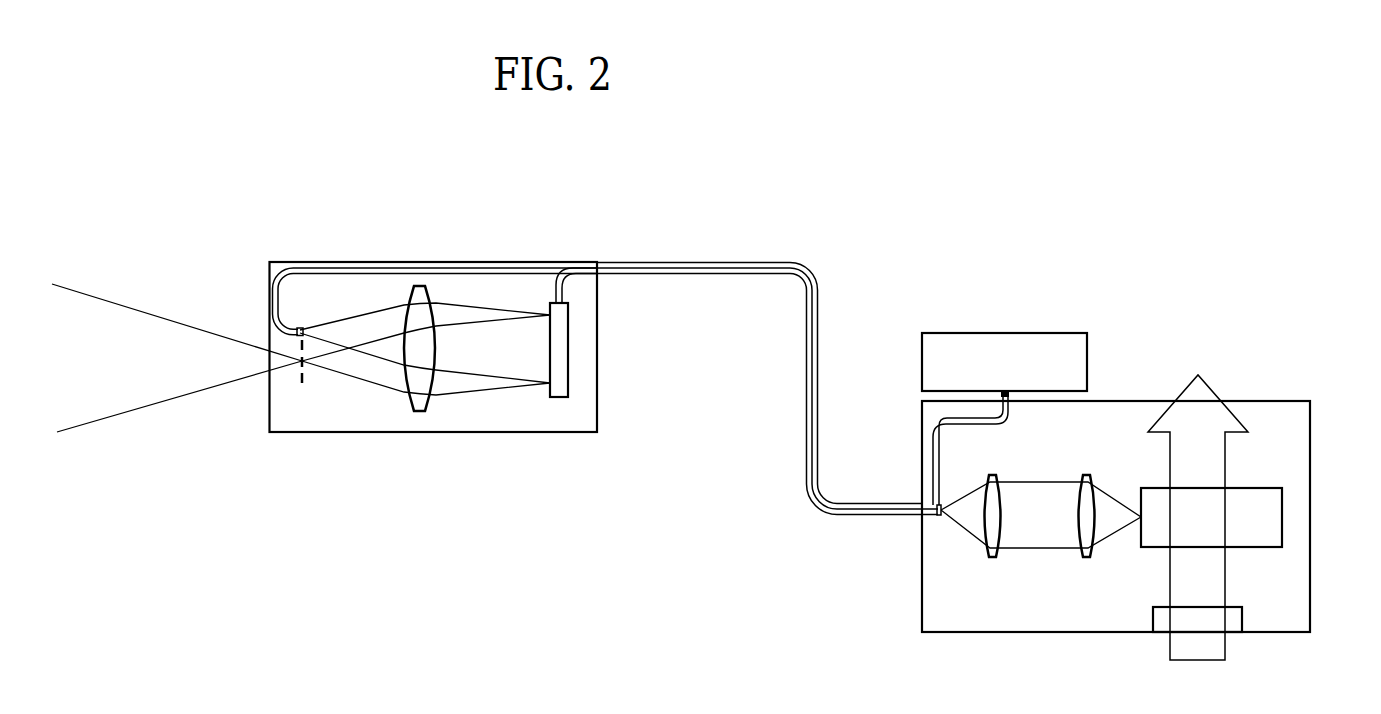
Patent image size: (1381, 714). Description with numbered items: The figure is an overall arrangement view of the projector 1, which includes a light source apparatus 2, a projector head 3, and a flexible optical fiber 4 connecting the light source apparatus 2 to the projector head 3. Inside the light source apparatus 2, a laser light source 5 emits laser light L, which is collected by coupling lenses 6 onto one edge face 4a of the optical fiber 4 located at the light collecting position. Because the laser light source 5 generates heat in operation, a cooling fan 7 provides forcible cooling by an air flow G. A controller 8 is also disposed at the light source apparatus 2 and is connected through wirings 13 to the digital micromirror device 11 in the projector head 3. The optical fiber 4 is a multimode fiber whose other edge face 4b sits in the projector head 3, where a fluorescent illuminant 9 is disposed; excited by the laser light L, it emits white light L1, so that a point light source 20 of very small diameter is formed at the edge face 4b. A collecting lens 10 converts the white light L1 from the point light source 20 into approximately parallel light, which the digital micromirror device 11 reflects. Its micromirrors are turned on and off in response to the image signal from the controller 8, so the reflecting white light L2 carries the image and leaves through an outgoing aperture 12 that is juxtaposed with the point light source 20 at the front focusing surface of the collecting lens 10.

The projector 1 is at (920, 196).
The light source apparatus 2 is at (1131, 401).
The projector head 3 is at (598, 414).
The optical fiber 4 is at (807, 489).
The edge face 4a is at (940, 520).
The edge face 4b is at (292, 330).
The laser light source 5 is at (1283, 518).
The coupling lenses 6 is at (993, 558).
The cooling fan 7 is at (1243, 620).
The controller 8 is at (1020, 333).
The fluorescent illuminant 9 is at (304, 328).
The collecting lens 10 is at (416, 413).
The digital micromirror device 11 is at (555, 399).
The outgoing aperture 12 is at (307, 388).
The wirings 13 is at (818, 345).
The point light source 20 is at (326, 312).
The laser light L is at (1043, 550).
The white light L1 is at (491, 304).
The reflecting white light L2 is at (479, 394).
The air flow G is at (1226, 460).